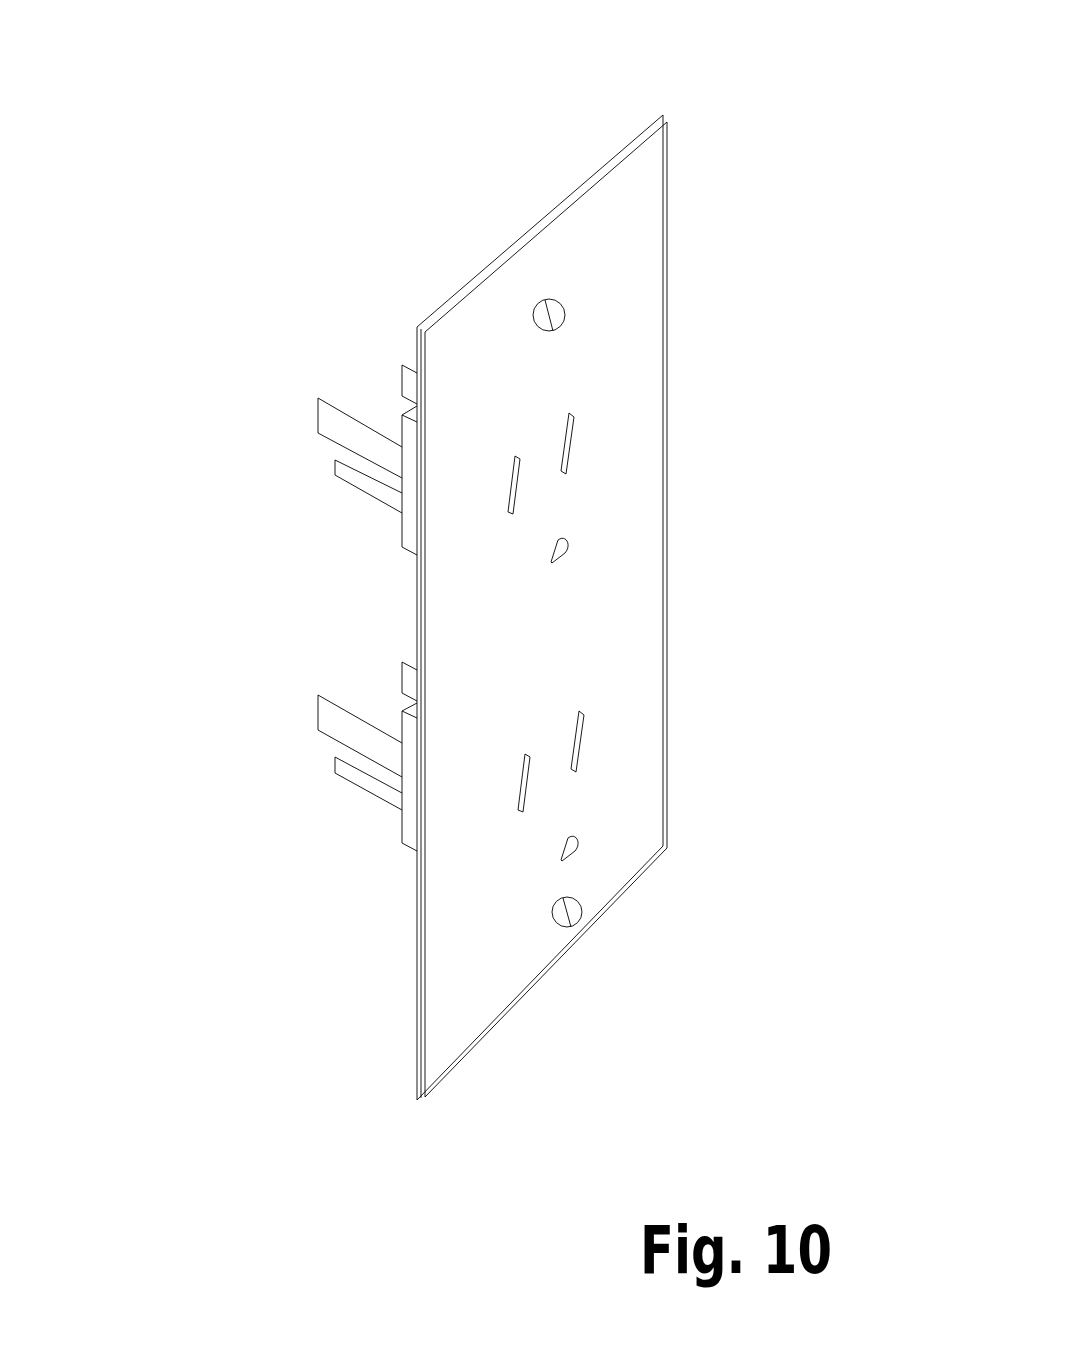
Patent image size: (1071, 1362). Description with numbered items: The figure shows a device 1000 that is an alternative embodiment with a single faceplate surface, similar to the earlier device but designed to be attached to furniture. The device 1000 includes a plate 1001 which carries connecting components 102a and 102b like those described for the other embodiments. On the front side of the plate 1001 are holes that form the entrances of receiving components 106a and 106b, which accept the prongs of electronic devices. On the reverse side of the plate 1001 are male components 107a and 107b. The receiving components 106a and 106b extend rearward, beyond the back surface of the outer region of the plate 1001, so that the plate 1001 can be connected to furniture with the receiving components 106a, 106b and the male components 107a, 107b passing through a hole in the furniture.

The device 1000 is at (475, 583).
The plate 1001 is at (667, 808).
The connecting component 102a is at (550, 312).
The connecting component 102b is at (570, 928).
The receiving component 106a is at (638, 463).
The receiving component 106b is at (638, 783).
The male component 107a is at (290, 387).
The male component 107b is at (290, 743).